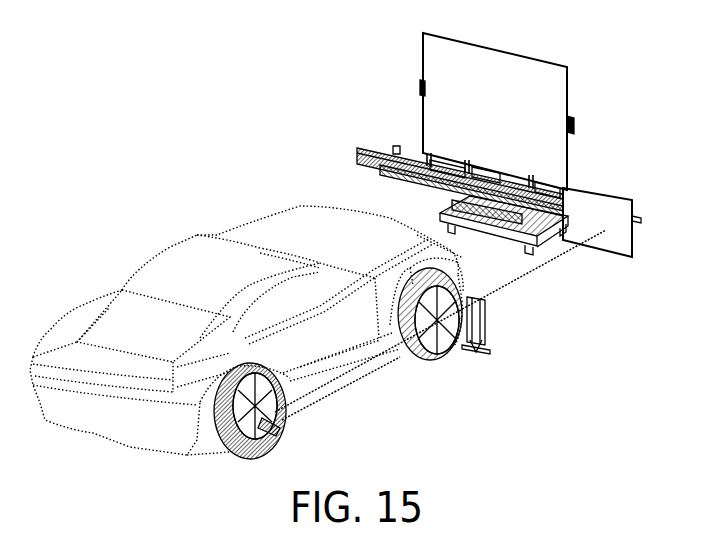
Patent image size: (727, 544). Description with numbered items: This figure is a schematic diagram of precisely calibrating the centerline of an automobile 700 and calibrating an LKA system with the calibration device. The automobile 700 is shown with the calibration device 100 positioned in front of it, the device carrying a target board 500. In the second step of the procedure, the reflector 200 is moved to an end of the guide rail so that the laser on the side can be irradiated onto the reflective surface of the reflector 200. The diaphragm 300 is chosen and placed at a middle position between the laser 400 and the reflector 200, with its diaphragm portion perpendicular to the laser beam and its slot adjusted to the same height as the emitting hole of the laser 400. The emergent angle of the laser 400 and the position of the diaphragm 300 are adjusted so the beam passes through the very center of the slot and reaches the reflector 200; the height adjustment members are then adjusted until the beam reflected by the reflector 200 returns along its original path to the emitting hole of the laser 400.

The rail / guide bar 100 is at (382, 150).
The reflector 200 is at (615, 205).
The diaphragm 300 is at (480, 307).
The laser 400 is at (278, 431).
The calibration target board 500 is at (513, 63).
The vehicle 700 is at (172, 267).